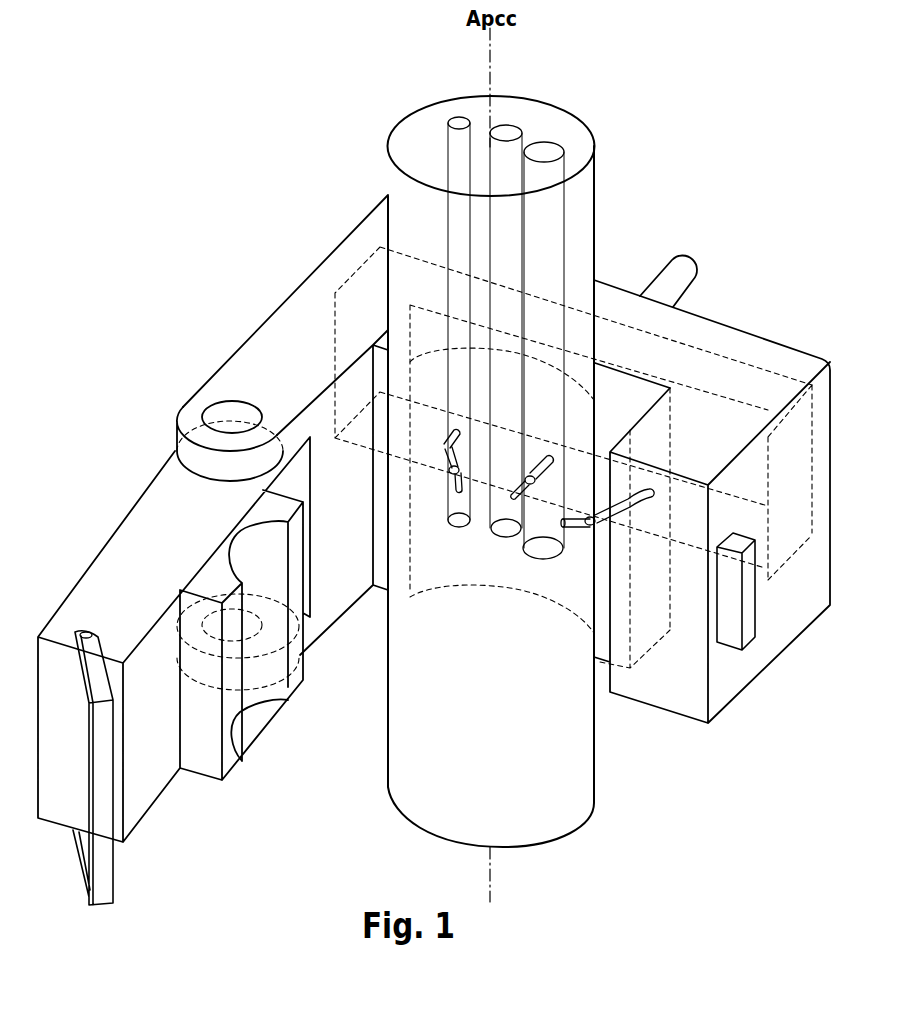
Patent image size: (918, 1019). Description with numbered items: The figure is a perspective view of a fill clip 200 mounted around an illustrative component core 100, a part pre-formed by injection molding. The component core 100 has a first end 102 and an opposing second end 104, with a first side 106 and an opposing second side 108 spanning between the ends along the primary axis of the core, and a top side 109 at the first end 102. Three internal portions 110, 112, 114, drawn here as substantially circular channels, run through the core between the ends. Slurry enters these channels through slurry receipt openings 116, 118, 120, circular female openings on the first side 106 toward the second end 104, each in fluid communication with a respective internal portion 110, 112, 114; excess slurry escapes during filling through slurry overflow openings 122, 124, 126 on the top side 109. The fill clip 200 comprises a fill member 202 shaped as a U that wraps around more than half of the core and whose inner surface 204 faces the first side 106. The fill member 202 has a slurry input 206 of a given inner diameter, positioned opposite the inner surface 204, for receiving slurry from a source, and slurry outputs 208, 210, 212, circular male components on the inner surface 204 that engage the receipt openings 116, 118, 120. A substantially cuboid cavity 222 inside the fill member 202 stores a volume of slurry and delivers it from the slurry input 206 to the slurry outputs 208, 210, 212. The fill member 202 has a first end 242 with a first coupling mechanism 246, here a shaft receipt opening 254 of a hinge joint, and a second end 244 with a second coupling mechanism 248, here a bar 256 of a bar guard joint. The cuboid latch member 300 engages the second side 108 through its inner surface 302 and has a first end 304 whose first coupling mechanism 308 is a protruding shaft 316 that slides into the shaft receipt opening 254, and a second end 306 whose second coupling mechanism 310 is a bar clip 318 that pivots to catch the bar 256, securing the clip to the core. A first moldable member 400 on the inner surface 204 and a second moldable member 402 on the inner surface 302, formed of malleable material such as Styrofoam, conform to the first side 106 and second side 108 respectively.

The component core 100 is at (584, 850).
The first end 102 is at (595, 266).
The second end 104 is at (594, 792).
The first side 106 is at (598, 184).
The second side 108 is at (427, 183).
The top side 109 is at (534, 123).
The internal portion 110 is at (460, 250).
The internal portion 112 is at (505, 220).
The internal portion 114 is at (538, 232).
The slurry receipt opening 116 is at (453, 467).
The slurry receipt opening 118 is at (530, 480).
The slurry receipt opening 120 is at (590, 521).
The slurry overflow opening 122 is at (458, 122).
The slurry overflow opening 124 is at (505, 128).
The slurry overflow opening 126 is at (545, 152).
The fill clip 200 is at (158, 108).
The fill member 202 is at (755, 295).
The inner surface 204 is at (340, 585).
The slurry input 206 is at (683, 272).
The slurry output 208 is at (443, 443).
The slurry output 210 is at (548, 472).
The slurry output 212 is at (617, 505).
The cavity 222 is at (790, 557).
The first end 242 is at (293, 327).
The second end 244 is at (770, 362).
The first coupling mechanism 246 is at (170, 425).
The second coupling mechanism 248 is at (738, 545).
The shaft receipt opening 254 is at (187, 393).
The bar 256 is at (760, 563).
The latch member 300 is at (85, 478).
The inner surface 302 is at (147, 748).
The first end 304 is at (177, 477).
The second end 306 is at (100, 593).
The first coupling mechanism 308 is at (228, 408).
The second coupling mechanism 310 is at (103, 878).
The shaft 316 is at (192, 383).
The bar clip 318 is at (144, 782).
The first moldable member 400 is at (652, 648).
The second moldable member 402 is at (240, 510).